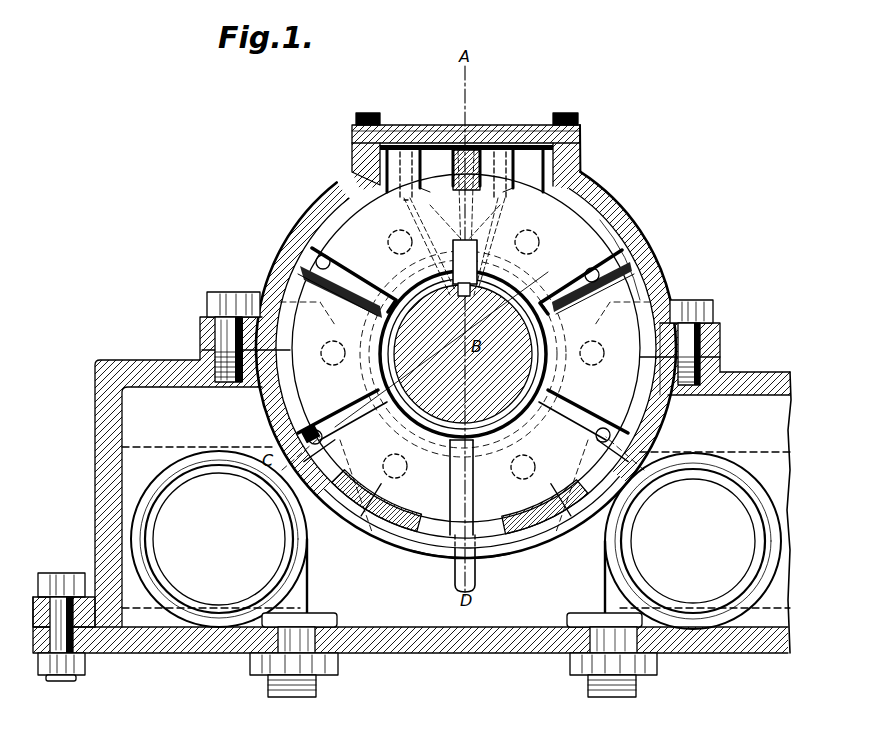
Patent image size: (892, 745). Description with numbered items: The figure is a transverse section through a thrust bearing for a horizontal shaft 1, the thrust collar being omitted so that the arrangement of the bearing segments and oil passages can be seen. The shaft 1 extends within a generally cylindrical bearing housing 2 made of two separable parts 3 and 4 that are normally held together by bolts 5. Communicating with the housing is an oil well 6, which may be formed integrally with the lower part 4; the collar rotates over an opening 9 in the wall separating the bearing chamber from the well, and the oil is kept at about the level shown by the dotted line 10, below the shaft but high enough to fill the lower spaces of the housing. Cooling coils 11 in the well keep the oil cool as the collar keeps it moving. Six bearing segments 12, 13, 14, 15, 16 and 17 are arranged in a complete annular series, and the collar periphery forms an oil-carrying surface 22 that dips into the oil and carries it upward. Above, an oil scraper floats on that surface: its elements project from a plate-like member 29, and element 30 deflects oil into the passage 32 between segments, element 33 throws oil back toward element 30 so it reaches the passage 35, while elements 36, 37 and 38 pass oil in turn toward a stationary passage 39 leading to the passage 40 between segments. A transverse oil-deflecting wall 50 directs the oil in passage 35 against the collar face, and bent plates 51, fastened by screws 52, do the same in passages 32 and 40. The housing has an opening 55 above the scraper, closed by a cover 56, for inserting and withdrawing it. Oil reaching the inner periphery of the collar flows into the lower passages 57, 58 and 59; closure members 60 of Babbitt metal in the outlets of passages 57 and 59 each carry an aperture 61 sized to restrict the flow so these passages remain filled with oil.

The horizontal shaft 1 is at (505, 300).
The bearing housing 2 is at (626, 226).
The housing part 3 is at (705, 323).
The housing part 4 is at (660, 375).
The bolts 5 is at (225, 327).
The oil well 6 is at (133, 417).
The opening 9 is at (500, 545).
The dotted line 10 is at (737, 450).
The cooling coils 11 is at (310, 563).
The bearing segment 12 is at (357, 520).
The bearing segment 13 is at (305, 390).
The bearing segment 14 is at (383, 212).
The bearing segment 15 is at (593, 213).
The bearing segment 16 is at (660, 322).
The bearing segment 17 is at (570, 507).
The oil-carrying surface 22 is at (427, 533).
The plate-like member 29 is at (495, 148).
The oil-removing element 30 is at (393, 140).
The oil passage 32 is at (300, 272).
The oil-removing element 33 is at (430, 147).
The oil passage 35 is at (472, 245).
The oil-removing element 36 is at (483, 160).
The oil-removing element 37 is at (507, 157).
The oil-removing element 38 is at (567, 160).
The oil passage 39 is at (613, 230).
The oil passage 40 is at (600, 300).
The transverse oil-deflecting wall 50 is at (462, 232).
The bent plates 51 is at (323, 208).
The screws 52 is at (303, 262).
The opening 55 is at (547, 167).
The cover 56 is at (355, 128).
The oil passage 57 is at (567, 413).
The oil passage 58 is at (467, 480).
The oil passage 59 is at (340, 448).
The closure members 60 is at (312, 446).
The aperture 61 is at (277, 477).